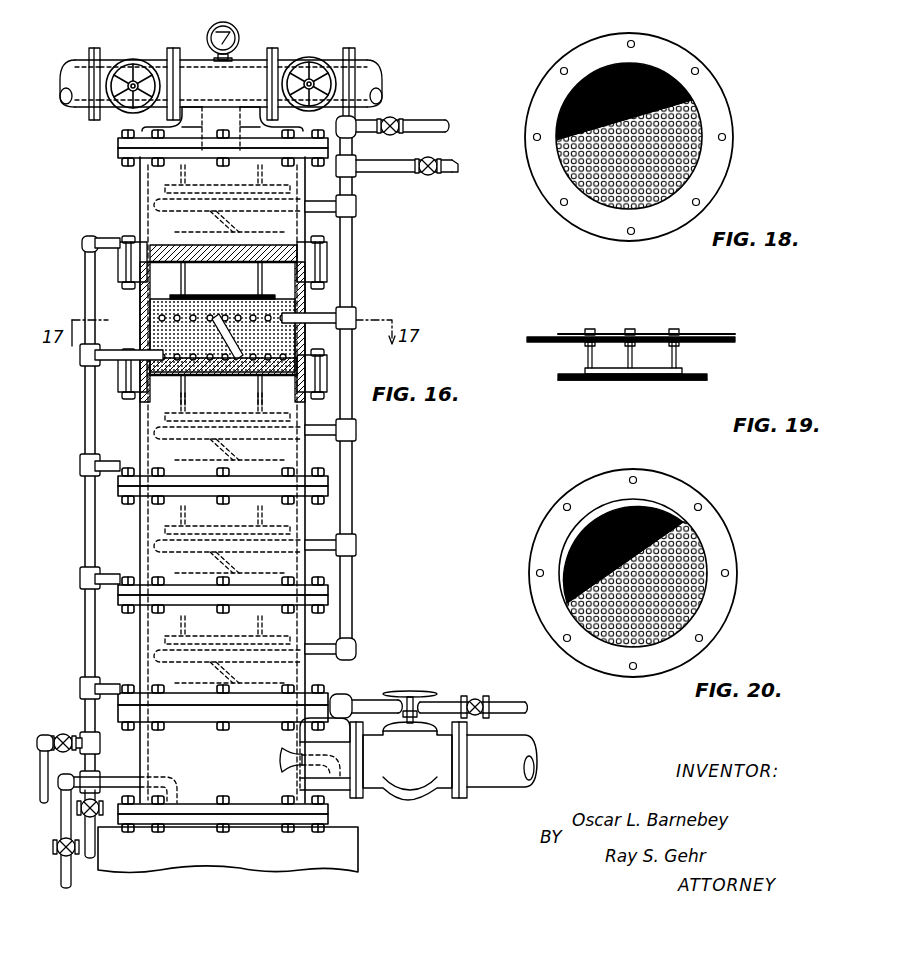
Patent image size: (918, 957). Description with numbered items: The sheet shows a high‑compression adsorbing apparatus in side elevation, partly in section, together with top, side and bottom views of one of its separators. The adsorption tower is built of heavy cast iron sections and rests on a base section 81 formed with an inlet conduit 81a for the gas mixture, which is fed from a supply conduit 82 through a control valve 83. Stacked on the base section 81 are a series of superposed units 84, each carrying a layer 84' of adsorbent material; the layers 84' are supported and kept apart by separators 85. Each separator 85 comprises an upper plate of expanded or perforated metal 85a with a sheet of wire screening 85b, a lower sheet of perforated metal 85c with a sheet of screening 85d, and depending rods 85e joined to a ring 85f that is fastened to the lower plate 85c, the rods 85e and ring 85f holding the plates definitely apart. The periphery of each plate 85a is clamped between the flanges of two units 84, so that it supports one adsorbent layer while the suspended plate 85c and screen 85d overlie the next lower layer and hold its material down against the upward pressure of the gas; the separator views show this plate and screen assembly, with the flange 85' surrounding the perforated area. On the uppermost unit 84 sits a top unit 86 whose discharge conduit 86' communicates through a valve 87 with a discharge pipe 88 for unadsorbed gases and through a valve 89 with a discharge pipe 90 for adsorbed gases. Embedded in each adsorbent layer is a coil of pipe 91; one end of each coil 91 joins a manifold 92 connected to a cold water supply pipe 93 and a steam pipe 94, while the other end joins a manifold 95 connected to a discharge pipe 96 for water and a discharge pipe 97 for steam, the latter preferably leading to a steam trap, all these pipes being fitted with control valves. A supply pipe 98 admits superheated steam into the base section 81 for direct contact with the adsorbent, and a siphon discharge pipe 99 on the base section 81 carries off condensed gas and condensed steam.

In FIG. 16, the base section 81 is at (162, 752).
In FIG. 16, the inlet conduit 81a is at (336, 775).
In FIG. 16, the supply conduit 82 is at (507, 782).
In FIG. 16, the control valve 83 is at (432, 798).
In FIG. 16, the superposed units 84 is at (213, 466).
In FIG. 16, the layer of adsorbent material 84' is at (311, 427).
In FIG. 16, the separator 85 is at (238, 395).
In FIG. 19, the separator 85 is at (529, 358).
In FIG. 20, the separator 85 is at (756, 533).
In FIG. 18, the flange 85' is at (651, 138).
In FIG. 16, the plate of expanded or perforated metal 85a is at (143, 396).
In FIG. 18, the plate of expanded or perforated metal 85a is at (574, 58).
In FIG. 19, the plate of expanded or perforated metal 85a is at (537, 336).
In FIG. 20, the plate of expanded or perforated metal 85a is at (553, 512).
In FIG. 16, the sheet of wire screening 85b is at (150, 343).
In FIG. 18, the sheet of wire screening 85b is at (660, 68).
In FIG. 19, the sheet of wire screening 85b is at (697, 332).
In FIG. 16, the lower sheet of expanded or perforated metal 85c is at (150, 287).
In FIG. 19, the lower sheet of expanded or perforated metal 85c is at (558, 378).
In FIG. 20, the lower sheet of expanded or perforated metal 85c is at (690, 590).
In FIG. 19, the sheet of screening 85d is at (698, 381).
In FIG. 20, the sheet of screening 85d is at (660, 500).
In FIG. 16, the depending rods 85e is at (186, 296).
In FIG. 18, the depending rods 85e is at (563, 103).
In FIG. 19, the depending rods 85e is at (592, 355).
In FIG. 16, the ring 85f is at (250, 300).
In FIG. 19, the ring 85f is at (648, 370).
In FIG. 20, the ring 85f is at (592, 630).
In FIG. 16, the top unit 86 is at (185, 128).
In FIG. 16, the discharge conduit 86' is at (231, 66).
In FIG. 16, the valve 87 is at (133, 58).
In FIG. 16, the discharge pipe 88 is at (78, 62).
In FIG. 16, the valve 89 is at (310, 57).
In FIG. 16, the discharge pipe 90 is at (368, 62).
In FIG. 16, the coil of pipe 91 is at (225, 352).
In FIG. 16, the manifold 92 is at (354, 282).
In FIG. 16, the cold water supply pipe 93 is at (446, 174).
In FIG. 16, the steam pipe 94 is at (424, 118).
In FIG. 16, the manifold 95 is at (84, 442).
In FIG. 16, the discharge pipe for water 96 is at (53, 736).
In FIG. 16, the discharge pipe for steam 97 is at (91, 856).
In FIG. 16, the supply pipe for superheated steam 98 is at (366, 699).
In FIG. 16, the siphon discharge pipe 99 is at (118, 780).